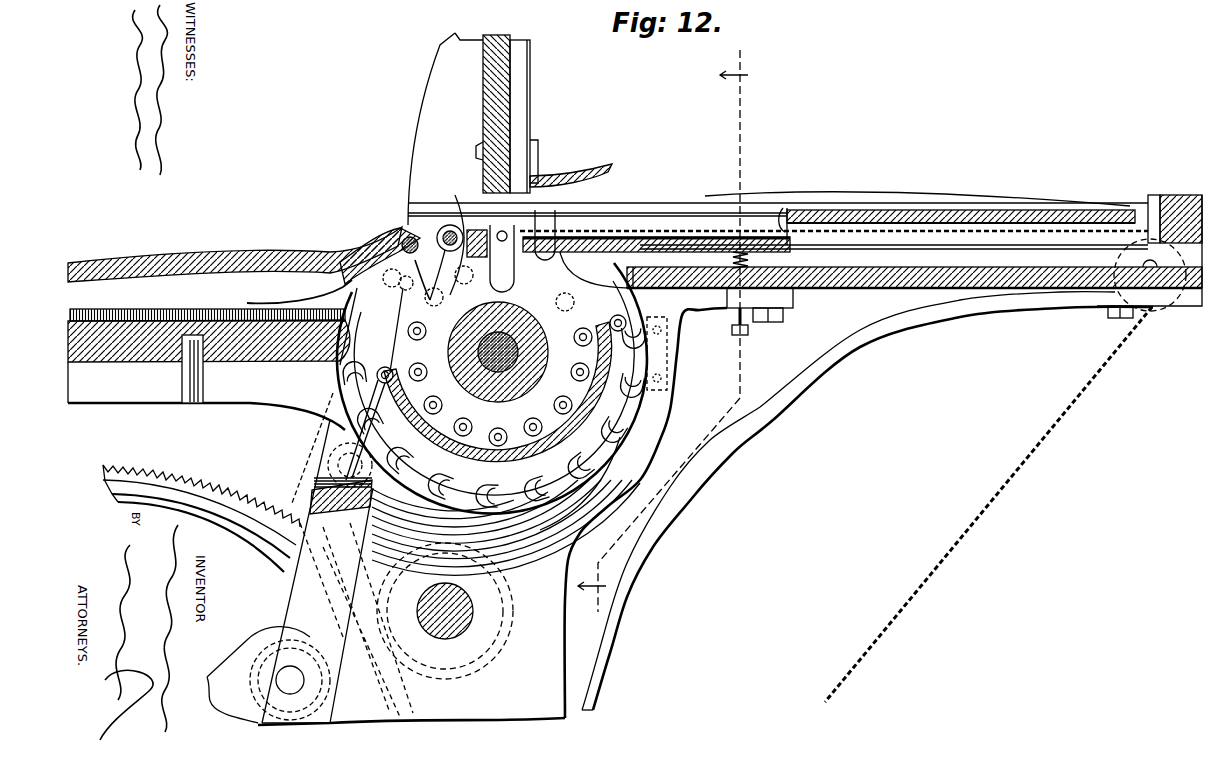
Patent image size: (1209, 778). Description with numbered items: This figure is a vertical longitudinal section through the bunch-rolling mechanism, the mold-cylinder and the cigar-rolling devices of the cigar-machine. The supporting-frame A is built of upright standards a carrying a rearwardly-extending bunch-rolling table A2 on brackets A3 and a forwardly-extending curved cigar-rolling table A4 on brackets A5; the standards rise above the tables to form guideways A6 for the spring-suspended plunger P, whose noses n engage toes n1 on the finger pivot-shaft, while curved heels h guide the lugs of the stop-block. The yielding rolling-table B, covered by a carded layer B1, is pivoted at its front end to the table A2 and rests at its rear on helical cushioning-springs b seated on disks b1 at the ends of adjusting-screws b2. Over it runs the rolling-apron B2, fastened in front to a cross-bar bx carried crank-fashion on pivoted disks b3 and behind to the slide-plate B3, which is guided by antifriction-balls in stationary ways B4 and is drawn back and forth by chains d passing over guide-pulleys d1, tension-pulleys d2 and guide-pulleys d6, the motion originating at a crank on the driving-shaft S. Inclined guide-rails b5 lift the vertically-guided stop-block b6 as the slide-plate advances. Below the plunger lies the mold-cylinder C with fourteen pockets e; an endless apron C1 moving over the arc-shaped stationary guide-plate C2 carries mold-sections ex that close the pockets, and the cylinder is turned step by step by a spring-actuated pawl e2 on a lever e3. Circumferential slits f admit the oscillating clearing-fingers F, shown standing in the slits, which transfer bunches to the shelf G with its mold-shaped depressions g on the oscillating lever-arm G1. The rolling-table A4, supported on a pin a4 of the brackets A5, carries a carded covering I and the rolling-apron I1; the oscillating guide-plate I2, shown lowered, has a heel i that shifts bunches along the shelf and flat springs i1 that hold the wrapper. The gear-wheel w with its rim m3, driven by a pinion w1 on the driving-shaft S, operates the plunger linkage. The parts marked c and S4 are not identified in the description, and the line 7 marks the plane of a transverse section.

The supporting-frame A is at (467, 516).
The bunch-rolling table A2 is at (860, 290).
The brackets A3 is at (795, 412).
The cigar-rolling table A4 is at (119, 344).
The brackets A5 is at (206, 396).
The guideways A6 is at (490, 55).
The plunger P is at (512, 110).
The projecting noses n is at (475, 150).
The toes n1 is at (492, 242).
The heel h is at (571, 169).
The yielding rolling-table B is at (600, 252).
The carded layer B1 is at (665, 235).
The rolling-apron B2 is at (782, 212).
The slide-plate B3 is at (968, 212).
The stationary ways B4 is at (408, 207).
The helical cushioning-springs b is at (750, 262).
The disks b1 is at (742, 290).
The adjusting-screws b2 is at (753, 327).
The disks b3 is at (525, 215).
The inclined guide-rails b5 is at (917, 190).
The stop-block b6 is at (1181, 204).
The transverse cross-bar bx is at (560, 240).
The surface covering I is at (209, 341).
The rolling-apron I1 is at (160, 312).
The oscillating guide-plate I2 is at (180, 258).
The heel i is at (420, 278).
The flat springs i1 is at (299, 289).
The circumferential slits f is at (439, 257).
The clearing-fingers F is at (462, 302).
The transverse shelf G is at (371, 330).
The oscillating lever-arm G1 is at (337, 571).
The mold-shaped depressions g is at (394, 273).
The operating-chains d is at (940, 548).
The guide-pulleys d1 is at (511, 290).
The tension-pulleys d2 is at (290, 680).
The guide-pulleys d6 is at (1150, 308).
The mold-cylinder C is at (508, 362).
The endless apron C1 is at (600, 425).
The stationary guide-plate C2 is at (620, 362).
The pins c is at (500, 356).
The hub S4 is at (498, 352).
The driving-shaft S is at (450, 630).
The pockets e is at (508, 350).
The mold-section ex is at (338, 393).
The spring-actuated pawl e2 is at (356, 433).
The lever e3 is at (305, 505).
The upright standards a is at (372, 574).
The pin a4 is at (200, 375).
The gear-wheel w is at (145, 480).
The pinion w1 is at (452, 611).
The raised rim m3 is at (110, 490).
The section line 7 is at (662, 328).